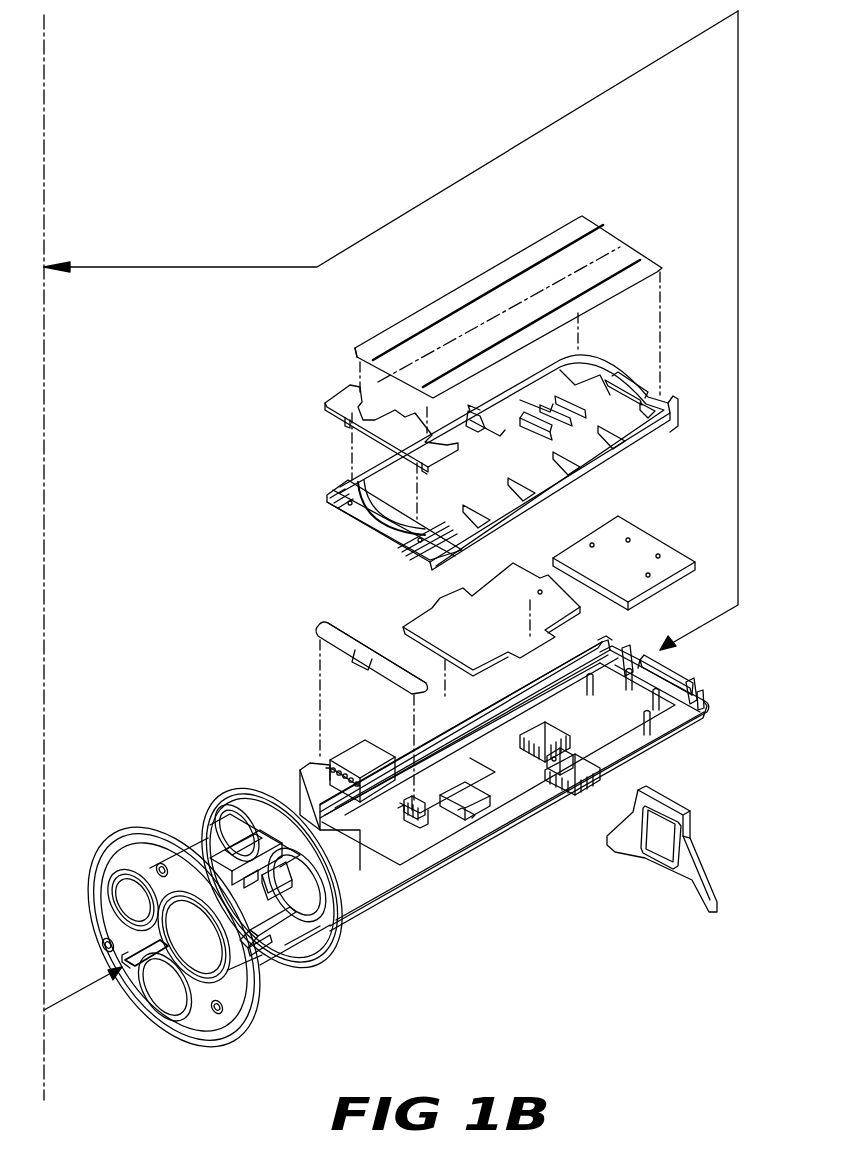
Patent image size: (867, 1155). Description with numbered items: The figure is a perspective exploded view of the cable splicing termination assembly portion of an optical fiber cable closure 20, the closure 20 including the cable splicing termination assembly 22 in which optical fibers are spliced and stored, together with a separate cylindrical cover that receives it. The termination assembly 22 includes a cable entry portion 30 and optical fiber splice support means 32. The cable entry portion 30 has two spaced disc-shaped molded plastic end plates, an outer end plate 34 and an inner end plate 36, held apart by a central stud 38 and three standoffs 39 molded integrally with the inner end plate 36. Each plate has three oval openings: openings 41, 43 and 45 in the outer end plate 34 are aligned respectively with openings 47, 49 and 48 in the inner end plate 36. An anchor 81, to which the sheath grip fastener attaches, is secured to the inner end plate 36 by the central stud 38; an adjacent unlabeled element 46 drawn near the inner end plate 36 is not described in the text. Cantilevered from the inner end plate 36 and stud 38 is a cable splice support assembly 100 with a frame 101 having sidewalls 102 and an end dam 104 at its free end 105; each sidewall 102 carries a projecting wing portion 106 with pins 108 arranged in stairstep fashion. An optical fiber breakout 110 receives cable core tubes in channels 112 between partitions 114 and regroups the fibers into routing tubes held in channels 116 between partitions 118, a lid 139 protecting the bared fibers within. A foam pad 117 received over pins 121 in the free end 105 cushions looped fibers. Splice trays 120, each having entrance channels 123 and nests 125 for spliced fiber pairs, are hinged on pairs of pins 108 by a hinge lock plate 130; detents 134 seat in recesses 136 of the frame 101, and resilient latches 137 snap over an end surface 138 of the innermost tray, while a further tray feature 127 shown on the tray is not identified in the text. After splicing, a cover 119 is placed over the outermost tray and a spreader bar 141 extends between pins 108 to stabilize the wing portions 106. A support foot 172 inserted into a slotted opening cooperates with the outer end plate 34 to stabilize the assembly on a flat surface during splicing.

The optical fiber cable closure 20 is at (163, 515).
The cable splicing termination assembly 22 is at (247, 708).
The cable entry portion 30 is at (108, 824).
The optical fiber splice support means 32 is at (462, 904).
The outer end plate 34 is at (243, 1026).
The inner end plate 36 is at (318, 948).
The central stud 38 is at (247, 878).
The standoffs 39 is at (256, 962).
The oval shaped opening 41 is at (120, 905).
The oval shaped opening 43 is at (180, 995).
The oval shaped opening 45 is at (190, 940).
The support bracket 46 is at (242, 800).
The oval shaped opening 47 is at (228, 830).
The oval shaped opening 48 is at (300, 866).
The oval shaped opening 49 is at (262, 936).
The anchor 81 is at (276, 870).
The cable splice support assembly 100 is at (548, 825).
The frame 101 is at (488, 846).
The sidewalls 102 is at (580, 668).
The end dam 104 is at (632, 652).
The free end 105 is at (652, 642).
The projecting wing portion 106 is at (368, 758).
The pins 108 is at (343, 762).
The optical fiber breakout 110 is at (555, 740).
The channel 112 is at (470, 806).
The partitions 114 is at (412, 792).
The channel 116 is at (520, 716).
The foam pad 117 is at (640, 535).
The partitions 118 is at (576, 770).
The cover 119 is at (515, 262).
The tray 120 is at (612, 363).
The pins 121 is at (628, 686).
The entrance channels 123 is at (345, 492).
The nests 125 is at (532, 430).
The tab 127 is at (486, 416).
The hinge lock plate 130 is at (345, 398).
The detents 134 is at (666, 423).
The recesses 136 is at (704, 702).
The resilient latches 137 is at (690, 682).
The end surface 138 is at (640, 390).
The lid 139 is at (497, 576).
The spreader bar 141 is at (330, 630).
The support foot 172 is at (630, 856).